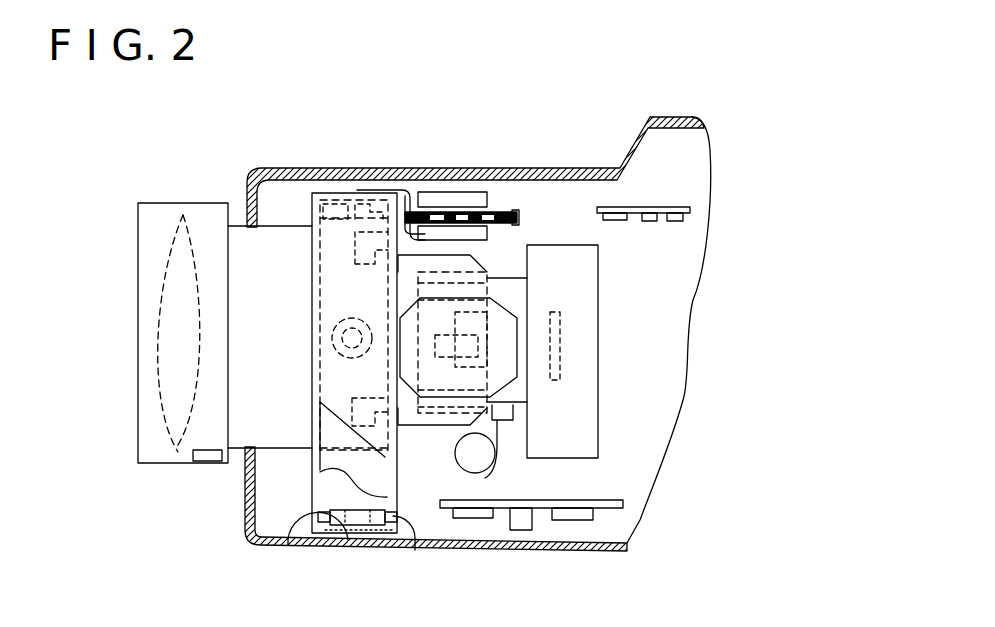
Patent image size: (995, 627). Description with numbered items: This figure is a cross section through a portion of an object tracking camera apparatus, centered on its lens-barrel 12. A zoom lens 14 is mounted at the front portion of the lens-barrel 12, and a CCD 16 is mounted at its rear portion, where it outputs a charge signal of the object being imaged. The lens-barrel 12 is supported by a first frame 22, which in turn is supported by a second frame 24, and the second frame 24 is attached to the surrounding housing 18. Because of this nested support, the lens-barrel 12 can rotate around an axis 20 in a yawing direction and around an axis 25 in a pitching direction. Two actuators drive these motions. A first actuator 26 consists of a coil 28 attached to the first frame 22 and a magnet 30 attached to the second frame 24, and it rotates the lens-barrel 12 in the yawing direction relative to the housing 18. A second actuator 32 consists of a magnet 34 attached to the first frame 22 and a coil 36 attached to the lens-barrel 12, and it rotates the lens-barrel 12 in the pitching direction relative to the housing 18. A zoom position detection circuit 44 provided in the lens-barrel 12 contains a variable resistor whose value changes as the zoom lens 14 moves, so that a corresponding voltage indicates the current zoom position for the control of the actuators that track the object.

The lens-barrel 12 is at (186, 203).
The zoom lens 14 is at (178, 452).
The CCD 16 is at (566, 287).
The housing 18 is at (525, 548).
The axis 20 is at (312, 530).
The first frame 22 is at (314, 430).
The second frame 24 is at (413, 548).
The axis 25 is at (317, 316).
The first actuator 26 is at (471, 170).
The coil 28 is at (505, 212).
The magnet 30 is at (462, 207).
The second actuator 32 is at (546, 340).
The magnet 34 is at (480, 373).
The coil 36 is at (507, 398).
The zoom position detection circuit 44 is at (205, 462).